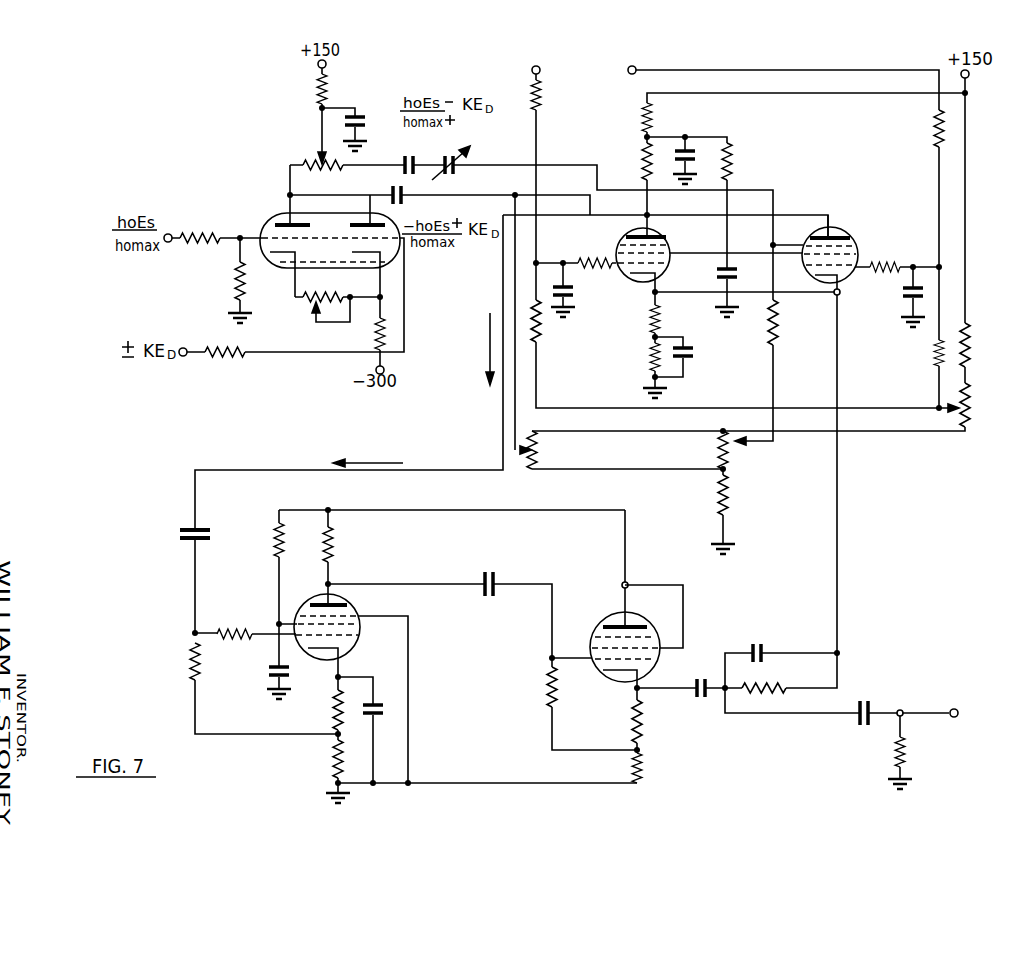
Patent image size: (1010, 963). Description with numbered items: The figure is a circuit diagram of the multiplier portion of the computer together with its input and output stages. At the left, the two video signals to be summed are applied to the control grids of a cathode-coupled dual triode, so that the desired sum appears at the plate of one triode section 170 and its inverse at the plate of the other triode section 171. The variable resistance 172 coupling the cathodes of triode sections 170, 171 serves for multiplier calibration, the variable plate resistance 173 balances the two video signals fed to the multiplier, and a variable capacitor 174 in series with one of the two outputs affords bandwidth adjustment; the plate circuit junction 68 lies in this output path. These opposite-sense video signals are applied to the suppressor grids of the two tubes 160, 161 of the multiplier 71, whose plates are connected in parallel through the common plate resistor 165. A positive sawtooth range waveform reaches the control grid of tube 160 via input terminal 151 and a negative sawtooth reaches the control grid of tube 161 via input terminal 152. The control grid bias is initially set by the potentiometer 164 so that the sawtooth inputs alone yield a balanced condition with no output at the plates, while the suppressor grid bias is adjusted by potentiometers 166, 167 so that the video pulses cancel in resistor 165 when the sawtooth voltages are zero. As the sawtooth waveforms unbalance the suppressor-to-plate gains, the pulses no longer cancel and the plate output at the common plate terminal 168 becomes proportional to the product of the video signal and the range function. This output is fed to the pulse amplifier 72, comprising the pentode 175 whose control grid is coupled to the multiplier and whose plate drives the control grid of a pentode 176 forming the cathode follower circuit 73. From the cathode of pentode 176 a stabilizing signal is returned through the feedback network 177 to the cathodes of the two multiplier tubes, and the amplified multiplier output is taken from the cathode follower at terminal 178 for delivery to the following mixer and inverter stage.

The junction 68 is at (290, 194).
The multiplier 71 is at (805, 177).
The pulse amplifier 72 is at (408, 642).
The cathode follower circuit 73 is at (636, 646).
The input terminal 151 is at (524, 150).
The input terminal 152 is at (643, 67).
The tube 160 is at (669, 240).
The tube 161 is at (851, 236).
The potentiometer 164 is at (958, 428).
The common plate resistor 165 is at (645, 175).
The potentiometer 166 is at (531, 463).
The potentiometer 167 is at (733, 452).
The common plate terminal 168 is at (646, 207).
The triode section 170 is at (342, 243).
The triode section 171 is at (395, 264).
The variable resistance 172 is at (314, 298).
The variable plate resistance 173 is at (322, 169).
The variable capacitor 174 is at (460, 172).
The pentode 175 is at (360, 632).
The pentode 176 is at (601, 627).
The feedback network 177 is at (805, 681).
The terminal 178 is at (947, 692).